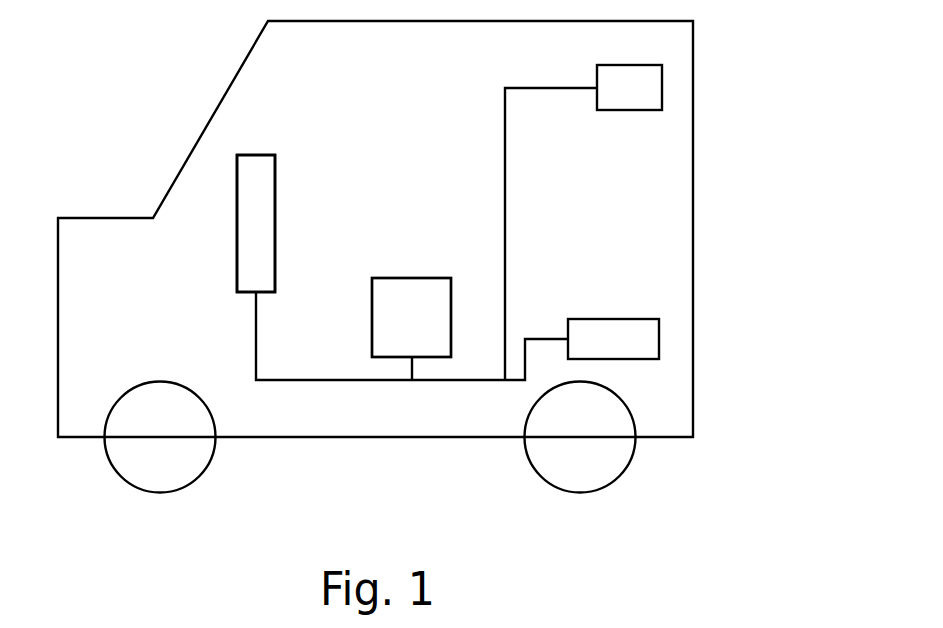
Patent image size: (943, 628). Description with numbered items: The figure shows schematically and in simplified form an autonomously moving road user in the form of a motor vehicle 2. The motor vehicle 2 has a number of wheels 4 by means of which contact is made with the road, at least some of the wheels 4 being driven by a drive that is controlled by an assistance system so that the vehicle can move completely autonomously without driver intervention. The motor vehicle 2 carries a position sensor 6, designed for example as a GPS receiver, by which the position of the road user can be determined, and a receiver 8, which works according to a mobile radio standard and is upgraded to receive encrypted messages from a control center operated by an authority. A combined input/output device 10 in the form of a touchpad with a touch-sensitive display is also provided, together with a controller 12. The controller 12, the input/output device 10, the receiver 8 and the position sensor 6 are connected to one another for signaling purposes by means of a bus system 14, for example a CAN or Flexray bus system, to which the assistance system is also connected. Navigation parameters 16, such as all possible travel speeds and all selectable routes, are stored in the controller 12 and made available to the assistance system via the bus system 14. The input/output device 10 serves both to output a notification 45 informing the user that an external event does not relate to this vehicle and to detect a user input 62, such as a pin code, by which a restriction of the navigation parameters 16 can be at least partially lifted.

The motor vehicle 2 is at (695, 178).
The wheels 4 is at (158, 476).
The position sensor 6 is at (648, 88).
The receiver 8 is at (650, 338).
The input/output device 10 is at (256, 256).
The controller 12 is at (392, 290).
The bus system 14 is at (351, 384).
The navigation parameters 16 is at (440, 297).
The notification 45 is at (275, 208).
The user input 62 is at (275, 267).